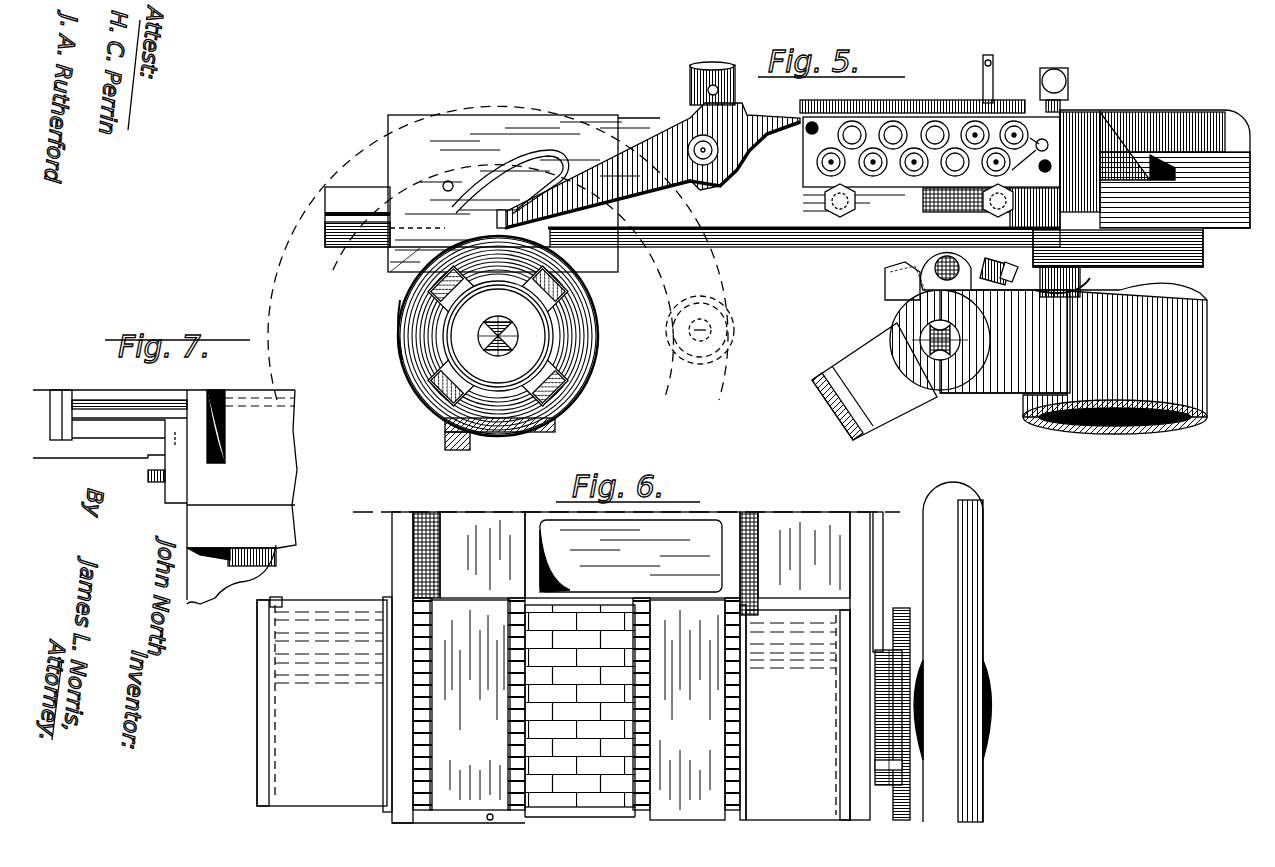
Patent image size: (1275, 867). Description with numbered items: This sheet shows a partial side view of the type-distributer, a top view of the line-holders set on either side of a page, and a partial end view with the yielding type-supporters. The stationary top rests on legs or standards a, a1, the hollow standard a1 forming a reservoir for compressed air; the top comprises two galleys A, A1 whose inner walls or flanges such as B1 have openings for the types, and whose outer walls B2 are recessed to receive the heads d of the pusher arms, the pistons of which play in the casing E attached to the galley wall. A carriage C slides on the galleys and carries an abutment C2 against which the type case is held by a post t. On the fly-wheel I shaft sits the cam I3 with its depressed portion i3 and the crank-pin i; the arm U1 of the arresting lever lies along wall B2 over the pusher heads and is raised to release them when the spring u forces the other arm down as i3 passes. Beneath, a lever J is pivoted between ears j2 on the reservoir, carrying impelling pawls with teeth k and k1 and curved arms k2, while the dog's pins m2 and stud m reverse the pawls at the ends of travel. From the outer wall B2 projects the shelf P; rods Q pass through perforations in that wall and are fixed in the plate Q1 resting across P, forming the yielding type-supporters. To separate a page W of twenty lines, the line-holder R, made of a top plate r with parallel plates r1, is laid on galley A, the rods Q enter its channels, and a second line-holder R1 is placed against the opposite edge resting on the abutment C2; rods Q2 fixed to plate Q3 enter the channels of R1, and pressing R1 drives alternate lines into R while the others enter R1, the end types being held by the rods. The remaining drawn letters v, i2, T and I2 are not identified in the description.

In FIG. 5, the outer wall of galley B2 is at (524, 193).
In FIG. 6, the outer wall of galley B2 is at (631, 667).
In FIG. 7, the outer wall of galley B2 is at (236, 495).
In FIG. 5, the inner wall or flange of galley B1 is at (1141, 182).
In FIG. 5, the carriage C is at (692, 224).
In FIG. 5, the spring u is at (506, 180).
In FIG. 6, the spring u is at (888, 717).
In FIG. 5, the lever v is at (648, 145).
In FIG. 5, the arm of arresting lever U1 is at (912, 96).
In FIG. 5, the post t is at (977, 73).
In FIG. 5, the casing E is at (926, 152).
In FIG. 5, the head of pusher arm d is at (903, 148).
In FIG. 5, the crank-pin i is at (492, 343).
In FIG. 5, the depressed portion of cam i3 is at (477, 336).
In FIG. 5, the cam I3 is at (514, 336).
In FIG. 5, the wheel rim i2 is at (494, 357).
In FIG. 5, the leg or standard a is at (500, 434).
In FIG. 7, the leg or standard a is at (231, 574).
In FIG. 5, the lever J is at (1003, 361).
In FIG. 5, the ear j2 is at (951, 340).
In FIG. 5, the hollow standard / air reservoir a1 is at (1115, 362).
In FIG. 5, the lower tooth of pawl k1 is at (971, 269).
In FIG. 5, the curved arm of pawl k2 is at (897, 273).
In FIG. 6, the shelf P is at (314, 704).
In FIG. 7, the shelf P is at (110, 461).
In FIG. 6, the tooth of pawl k is at (272, 598).
In FIG. 6, the rods (yielding type-supporters) Q is at (283, 603).
In FIG. 7, the rods (yielding type-supporters) Q is at (118, 398).
In FIG. 7, the plate Q1 is at (66, 390).
In FIG. 6, the type-supporting rods Q2 is at (745, 770).
In FIG. 6, the plate Q3 is at (745, 700).
In FIG. 6, the galley A is at (490, 568).
In FIG. 6, the galley A1 is at (820, 560).
In FIG. 6, the abutment C2 is at (632, 555).
In FIG. 6, the line-holder R is at (458, 710).
In FIG. 6, the line-holder R1 is at (686, 709).
In FIG. 6, the top plate of line-holder r is at (515, 743).
In FIG. 6, the parallel flat plates r1 is at (488, 701).
In FIG. 6, the stud m is at (481, 817).
In FIG. 6, the page W is at (580, 711).
In FIG. 6, the plate T is at (664, 817).
In FIG. 6, the fly-wheel I is at (953, 652).
In FIG. 6, the gear I2 is at (910, 604).